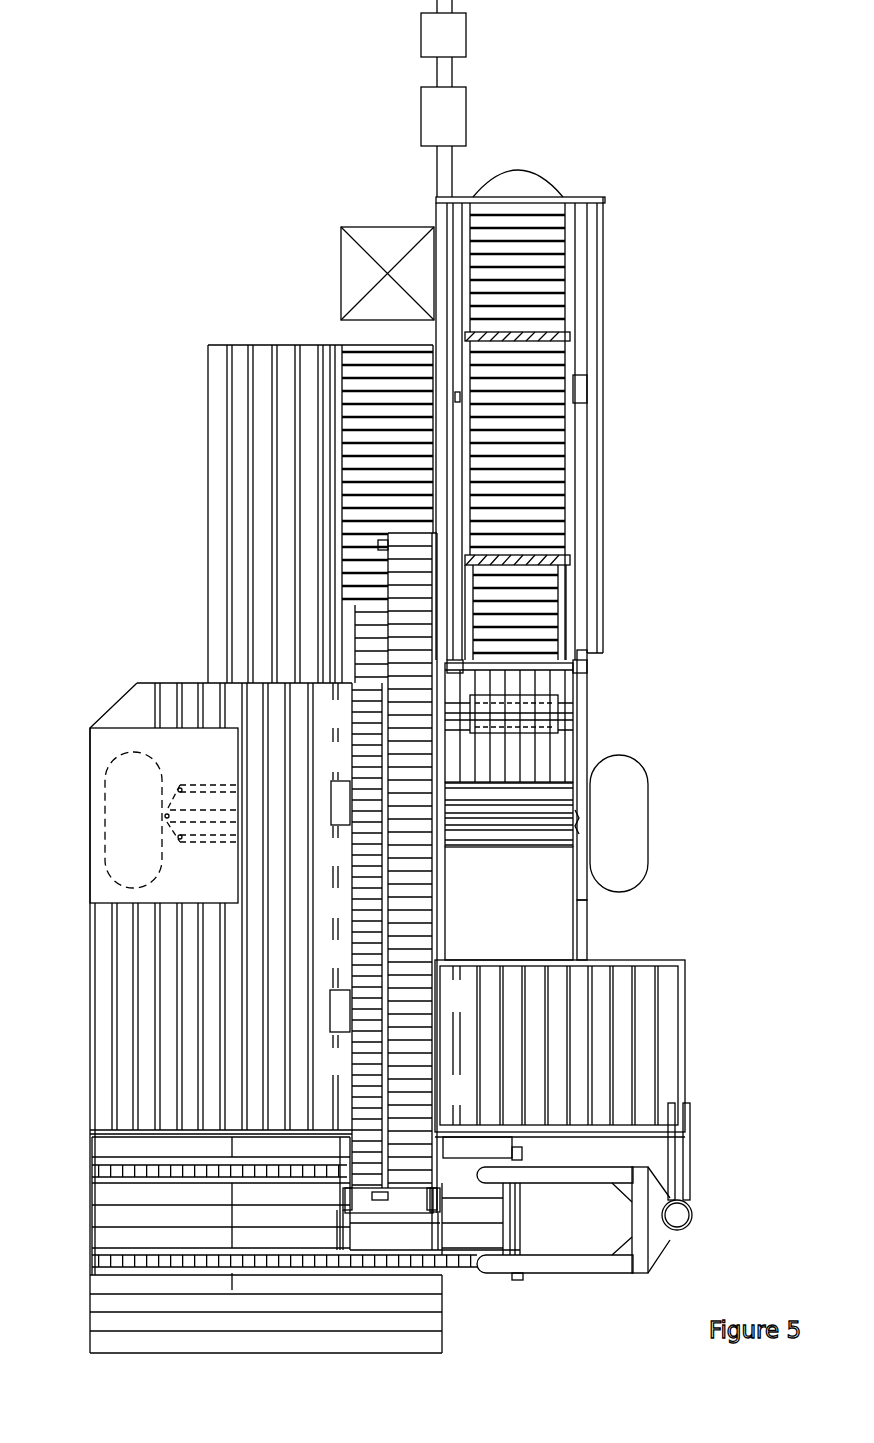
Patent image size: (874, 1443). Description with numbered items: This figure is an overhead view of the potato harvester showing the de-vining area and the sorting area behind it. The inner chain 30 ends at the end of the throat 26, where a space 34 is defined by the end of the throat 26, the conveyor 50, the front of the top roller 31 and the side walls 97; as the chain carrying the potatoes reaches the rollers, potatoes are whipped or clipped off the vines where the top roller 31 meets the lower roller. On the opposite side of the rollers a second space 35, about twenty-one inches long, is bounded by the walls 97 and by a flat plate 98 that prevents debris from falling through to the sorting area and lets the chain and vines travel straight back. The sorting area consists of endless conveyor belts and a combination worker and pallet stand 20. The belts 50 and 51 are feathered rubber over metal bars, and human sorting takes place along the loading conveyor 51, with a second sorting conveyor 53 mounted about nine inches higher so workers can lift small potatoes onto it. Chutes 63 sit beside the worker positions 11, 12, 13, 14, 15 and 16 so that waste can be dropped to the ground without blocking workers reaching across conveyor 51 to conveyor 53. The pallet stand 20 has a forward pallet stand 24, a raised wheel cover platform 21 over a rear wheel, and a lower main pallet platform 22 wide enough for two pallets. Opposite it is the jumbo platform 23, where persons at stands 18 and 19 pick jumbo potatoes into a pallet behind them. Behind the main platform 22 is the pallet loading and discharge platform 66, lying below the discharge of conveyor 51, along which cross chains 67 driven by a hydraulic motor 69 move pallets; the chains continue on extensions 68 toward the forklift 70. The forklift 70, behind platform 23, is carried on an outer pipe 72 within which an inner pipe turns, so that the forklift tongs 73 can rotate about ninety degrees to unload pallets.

The person stand 11 is at (346, 726).
The person stand 12 is at (323, 771).
The person stand 13 is at (323, 867).
The person stand 14 is at (323, 919).
The person stand 15 is at (348, 969).
The person stand 16 is at (348, 1074).
The person stand 18 is at (470, 1104).
The person stand 19 is at (470, 1007).
The pallet stand 20 is at (90, 788).
The wheel cover platform 21 is at (127, 743).
The main pallet platform 22 is at (90, 1028).
The jumbo platform 23 is at (637, 1033).
The forward pallet stand 24 is at (363, 437).
The throat 26 is at (621, 211).
The inner chain 30 is at (520, 607).
The top roller 31 is at (528, 708).
The space 34 is at (515, 680).
The second space 35 is at (527, 924).
The conveyor belt 50 is at (533, 765).
The loading conveyor 51 is at (377, 710).
The second sorting conveyor 53 is at (413, 577).
The chutes 63 is at (342, 1010).
The pallet loading and discharge platform 66 is at (170, 1218).
The cross chains 67 is at (100, 1262).
The extensions 68 is at (518, 1280).
The hydraulic motor 69 is at (522, 1153).
The forklift 70 is at (657, 1260).
The outer pipe 72 is at (695, 1208).
The forklift tongs 73 is at (575, 1273).
The side walls 97 is at (580, 862).
The flat plate 98 is at (548, 917).